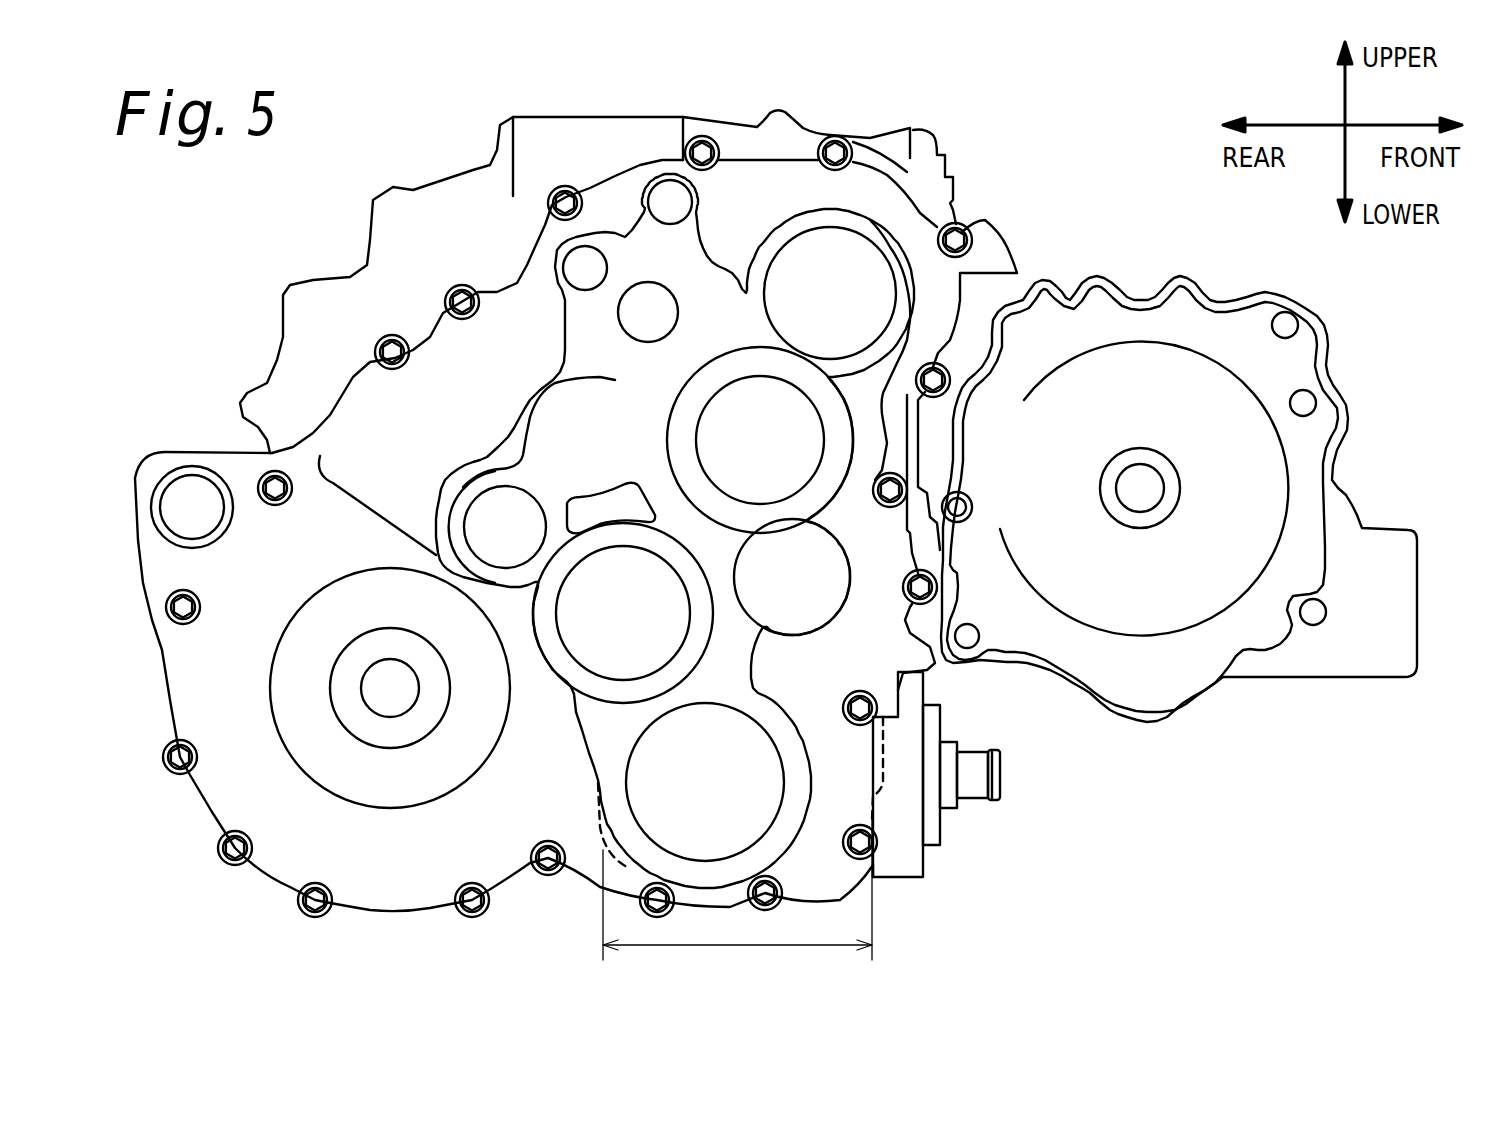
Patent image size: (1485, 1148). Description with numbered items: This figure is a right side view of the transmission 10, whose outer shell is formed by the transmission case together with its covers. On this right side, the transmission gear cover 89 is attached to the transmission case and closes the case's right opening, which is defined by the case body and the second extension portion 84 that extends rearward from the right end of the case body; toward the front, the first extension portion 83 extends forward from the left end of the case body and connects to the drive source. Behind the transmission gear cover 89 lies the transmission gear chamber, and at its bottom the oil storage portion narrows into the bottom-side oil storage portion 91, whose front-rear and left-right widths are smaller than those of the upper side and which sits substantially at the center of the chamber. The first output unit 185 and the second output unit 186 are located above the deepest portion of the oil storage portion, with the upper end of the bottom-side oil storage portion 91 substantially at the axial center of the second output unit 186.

The transmission 10 is at (1068, 740).
The first extension portion 83 is at (1101, 270).
The second extension portion 84 is at (225, 452).
The transmission gear cover 89 is at (267, 777).
The bottom-side oil storage portion 91 is at (737, 890).
The first output unit 185 is at (372, 672).
The second output unit 186 is at (962, 800).